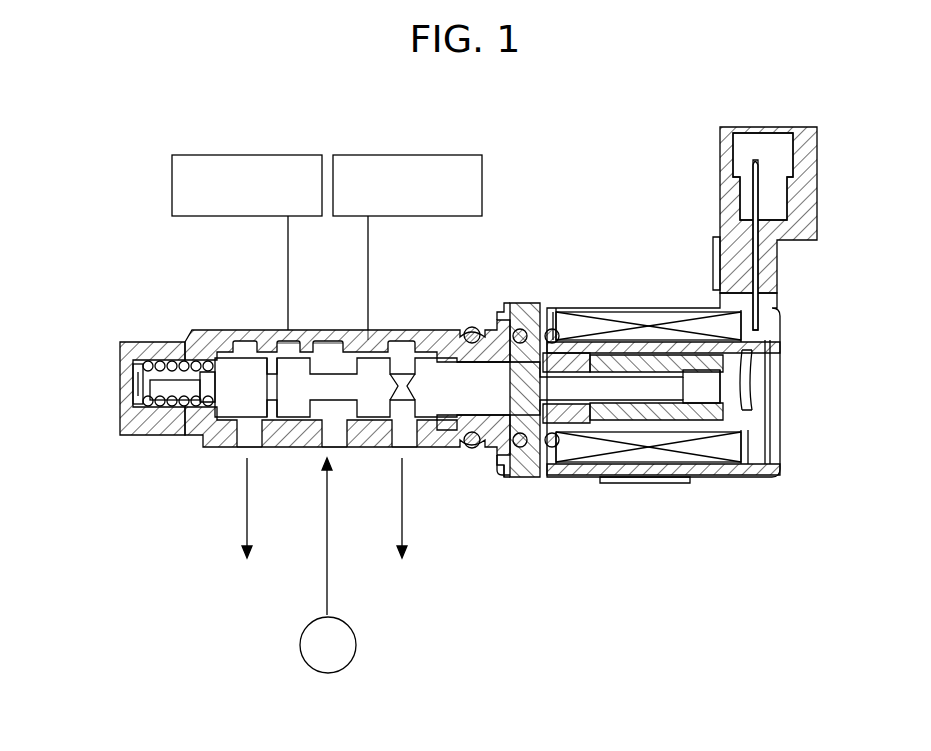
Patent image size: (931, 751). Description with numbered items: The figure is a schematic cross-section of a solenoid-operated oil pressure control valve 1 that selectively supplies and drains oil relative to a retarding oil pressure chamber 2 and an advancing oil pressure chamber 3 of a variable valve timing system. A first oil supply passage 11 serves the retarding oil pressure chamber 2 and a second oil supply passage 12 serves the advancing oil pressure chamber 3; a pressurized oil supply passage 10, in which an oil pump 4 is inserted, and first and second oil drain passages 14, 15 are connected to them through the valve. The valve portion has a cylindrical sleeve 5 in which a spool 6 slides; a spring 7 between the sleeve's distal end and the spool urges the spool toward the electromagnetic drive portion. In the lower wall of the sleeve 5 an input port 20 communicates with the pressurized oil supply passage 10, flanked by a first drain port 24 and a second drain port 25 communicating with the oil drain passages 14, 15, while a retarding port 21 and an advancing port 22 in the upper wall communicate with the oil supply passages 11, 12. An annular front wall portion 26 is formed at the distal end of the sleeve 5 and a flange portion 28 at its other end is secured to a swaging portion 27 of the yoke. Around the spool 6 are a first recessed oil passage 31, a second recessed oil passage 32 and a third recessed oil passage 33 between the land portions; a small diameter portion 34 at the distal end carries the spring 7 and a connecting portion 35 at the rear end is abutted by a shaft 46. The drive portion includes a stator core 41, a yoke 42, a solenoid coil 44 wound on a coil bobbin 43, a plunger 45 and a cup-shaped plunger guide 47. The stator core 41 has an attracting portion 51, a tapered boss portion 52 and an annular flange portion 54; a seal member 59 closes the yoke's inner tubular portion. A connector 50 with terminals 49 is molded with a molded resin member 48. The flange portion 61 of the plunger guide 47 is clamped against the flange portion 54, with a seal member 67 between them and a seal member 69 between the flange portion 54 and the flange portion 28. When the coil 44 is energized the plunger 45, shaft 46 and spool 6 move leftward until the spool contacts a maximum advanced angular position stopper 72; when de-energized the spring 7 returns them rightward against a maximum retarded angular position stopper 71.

The solenoid-operated oil pressure control valve 1 is at (148, 260).
The retarding oil pressure chamber 2 is at (397, 155).
The advancing oil pressure chamber 3 is at (243, 155).
The oil pump 4 is at (356, 645).
The sleeve 5 is at (198, 332).
The spool 6 is at (228, 452).
The spring 7 is at (153, 410).
The pressurized oil supply passage 10 is at (328, 602).
The first oil supply passage 11 is at (368, 240).
The second oil supply passage 12 is at (288, 240).
The first oil drain passage 14 is at (402, 522).
The second oil drain passage 15 is at (247, 522).
The input port 20 is at (335, 442).
The retarding port 21 is at (374, 340).
The advancing port 22 is at (283, 338).
The first drain port 24 is at (410, 442).
The second drain port 25 is at (252, 442).
The annular front wall portion 26 is at (125, 356).
The swaging portion 27 is at (504, 475).
The flange portion 28 is at (511, 478).
The first recessed oil passage 31 is at (405, 346).
The second recessed oil passage 32 is at (330, 378).
The third recessed oil passage 33 is at (248, 347).
The small diameter portion 34 is at (203, 400).
The connecting portion 35 is at (487, 378).
The stator core 41 is at (565, 355).
The yoke 42 is at (780, 455).
The coil bobbin 43 is at (745, 460).
The solenoid coil 44 is at (688, 458).
The plunger 45 is at (722, 388).
The shaft 46 is at (628, 458).
The plunger guide 47 is at (752, 375).
The molded resin member 48 is at (718, 262).
The terminals 49 is at (752, 190).
The connector 50 is at (727, 152).
The attracting portion 51 is at (585, 330).
The tapered boss portion 52 is at (622, 340).
The annular flange portion 54 is at (538, 468).
The seal member 59 is at (767, 420).
The flange portion 61 is at (562, 468).
The seal member 67 is at (532, 346).
The seal member 69 is at (518, 330).
The maximum retarded angular position stopper 71 is at (497, 440).
The maximum advanced angular position stopper 72 is at (143, 350).